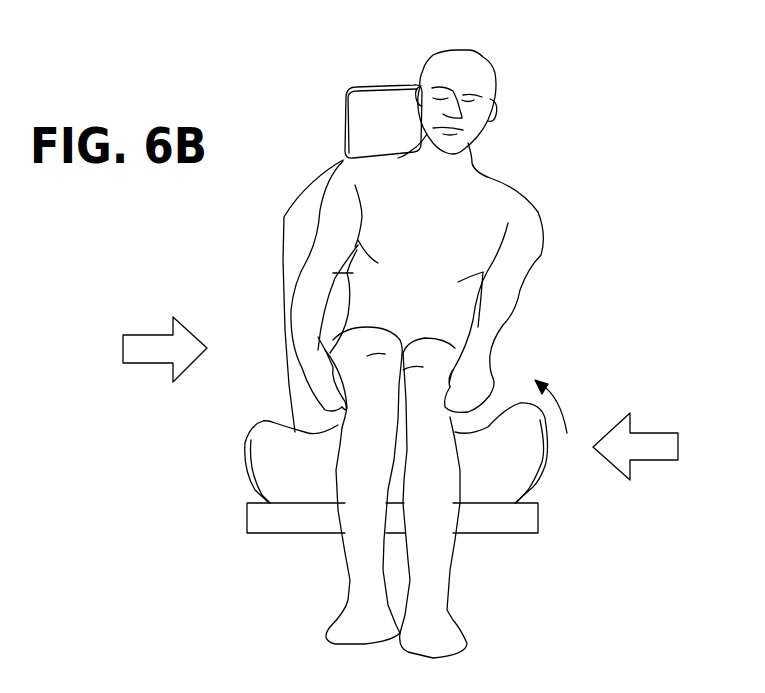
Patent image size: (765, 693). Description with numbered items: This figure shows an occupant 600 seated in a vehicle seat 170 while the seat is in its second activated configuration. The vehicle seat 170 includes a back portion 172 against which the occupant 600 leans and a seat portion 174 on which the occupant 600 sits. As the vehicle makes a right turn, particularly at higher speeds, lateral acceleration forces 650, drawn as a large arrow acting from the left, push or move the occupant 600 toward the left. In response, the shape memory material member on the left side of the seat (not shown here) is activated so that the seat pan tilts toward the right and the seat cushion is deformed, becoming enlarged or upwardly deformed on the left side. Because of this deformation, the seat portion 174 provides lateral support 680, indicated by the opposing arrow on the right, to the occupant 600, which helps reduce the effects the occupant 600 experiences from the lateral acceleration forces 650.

The vehicle seat 170 is at (342, 130).
The back portion 172 is at (282, 226).
The seat portion 174 is at (530, 487).
The occupant 600 is at (507, 187).
The lateral acceleration forces 650 is at (150, 365).
The lateral support 680 is at (653, 432).